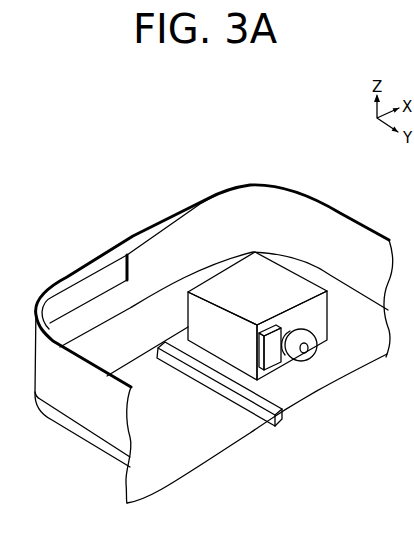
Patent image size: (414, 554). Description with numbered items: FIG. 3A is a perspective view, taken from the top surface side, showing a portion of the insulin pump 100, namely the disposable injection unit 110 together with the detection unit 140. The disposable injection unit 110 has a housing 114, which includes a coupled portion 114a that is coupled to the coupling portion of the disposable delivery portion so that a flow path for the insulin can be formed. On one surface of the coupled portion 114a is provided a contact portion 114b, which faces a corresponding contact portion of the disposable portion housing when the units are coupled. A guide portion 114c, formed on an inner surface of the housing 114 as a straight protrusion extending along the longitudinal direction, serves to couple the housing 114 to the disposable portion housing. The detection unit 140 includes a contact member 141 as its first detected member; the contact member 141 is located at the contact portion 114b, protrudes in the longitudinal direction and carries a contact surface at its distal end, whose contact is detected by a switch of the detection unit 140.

The insulin pump 100 is at (126, 135).
The disposable injection unit 110 is at (121, 209).
The housing 114 is at (185, 403).
The coupled portion 114a is at (272, 272).
The contact portion 114b is at (252, 340).
The guide portion 114c is at (218, 376).
The detection unit 140 is at (323, 412).
The contact member 141 is at (277, 360).